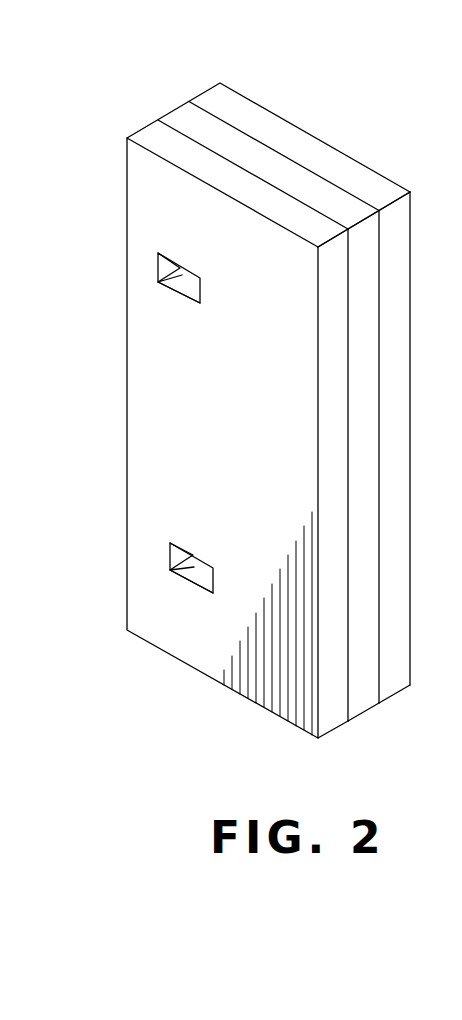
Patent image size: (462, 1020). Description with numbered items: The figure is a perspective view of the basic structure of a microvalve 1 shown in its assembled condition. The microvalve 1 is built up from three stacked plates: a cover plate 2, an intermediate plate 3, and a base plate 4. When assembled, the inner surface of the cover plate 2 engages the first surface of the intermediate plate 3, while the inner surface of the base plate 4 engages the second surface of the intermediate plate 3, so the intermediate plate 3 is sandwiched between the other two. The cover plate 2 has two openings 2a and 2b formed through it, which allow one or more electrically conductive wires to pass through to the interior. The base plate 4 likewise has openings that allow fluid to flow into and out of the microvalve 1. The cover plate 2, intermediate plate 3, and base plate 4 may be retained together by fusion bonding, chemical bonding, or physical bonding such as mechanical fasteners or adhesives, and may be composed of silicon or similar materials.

The microvalve 1 is at (237, 379).
The cover plate 2 is at (225, 410).
The opening 2a is at (158, 282).
The opening 2b is at (172, 568).
The intermediate plate 3 is at (188, 120).
The base plate 4 is at (220, 102).